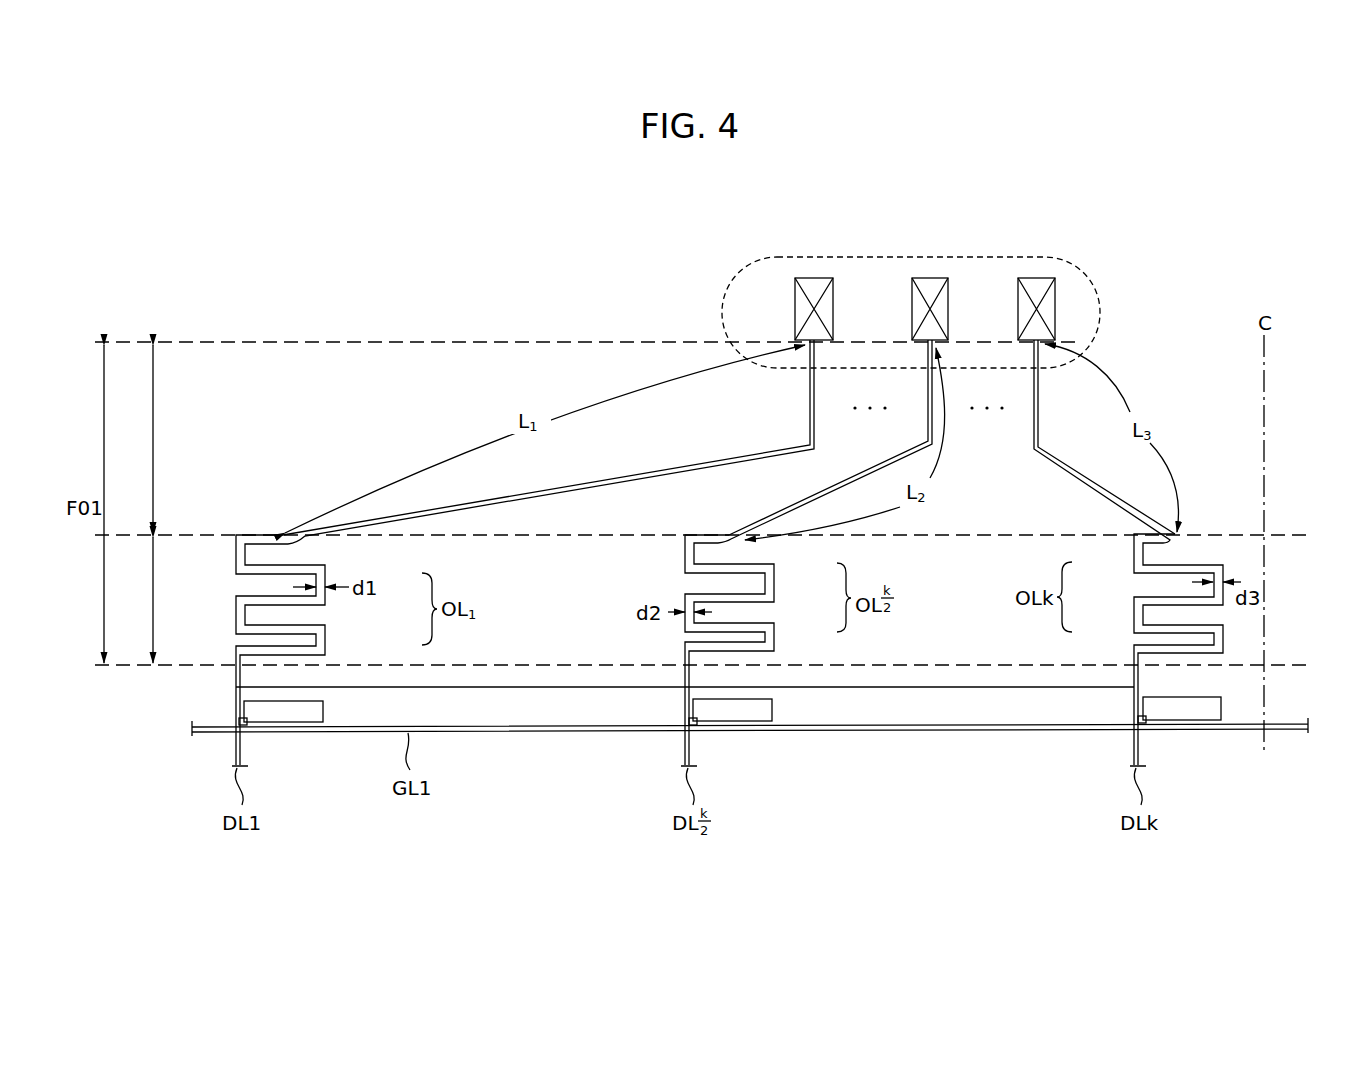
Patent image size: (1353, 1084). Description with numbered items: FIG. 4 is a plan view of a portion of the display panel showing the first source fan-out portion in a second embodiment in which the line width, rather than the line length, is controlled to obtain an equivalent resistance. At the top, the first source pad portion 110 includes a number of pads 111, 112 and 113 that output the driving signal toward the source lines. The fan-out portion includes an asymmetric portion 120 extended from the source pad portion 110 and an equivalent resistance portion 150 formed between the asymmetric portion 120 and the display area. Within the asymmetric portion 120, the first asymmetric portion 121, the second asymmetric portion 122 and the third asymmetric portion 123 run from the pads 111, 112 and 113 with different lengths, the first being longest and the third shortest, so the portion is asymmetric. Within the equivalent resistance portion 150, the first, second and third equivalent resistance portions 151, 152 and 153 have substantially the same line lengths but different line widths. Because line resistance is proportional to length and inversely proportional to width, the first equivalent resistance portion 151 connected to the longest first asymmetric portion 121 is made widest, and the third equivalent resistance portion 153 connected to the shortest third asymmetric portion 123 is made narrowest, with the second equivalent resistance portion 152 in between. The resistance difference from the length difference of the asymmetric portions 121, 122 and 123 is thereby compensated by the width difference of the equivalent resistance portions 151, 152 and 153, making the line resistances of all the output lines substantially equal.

The first source pad portion 110 is at (1078, 270).
The pad 111 is at (795, 307).
The pad 112 is at (912, 307).
The pad 113 is at (1018, 307).
The asymmetric portion 120 is at (134, 439).
The first asymmetric portion 121 is at (385, 521).
The second asymmetric portion 122 is at (781, 518).
The third asymmetric portion 123 is at (1095, 490).
The equivalent resistance portion 150 is at (134, 600).
The first equivalent resistance portion 151 is at (326, 632).
The second equivalent resistance portion 152 is at (774, 600).
The third equivalent resistance portion 153 is at (1134, 614).